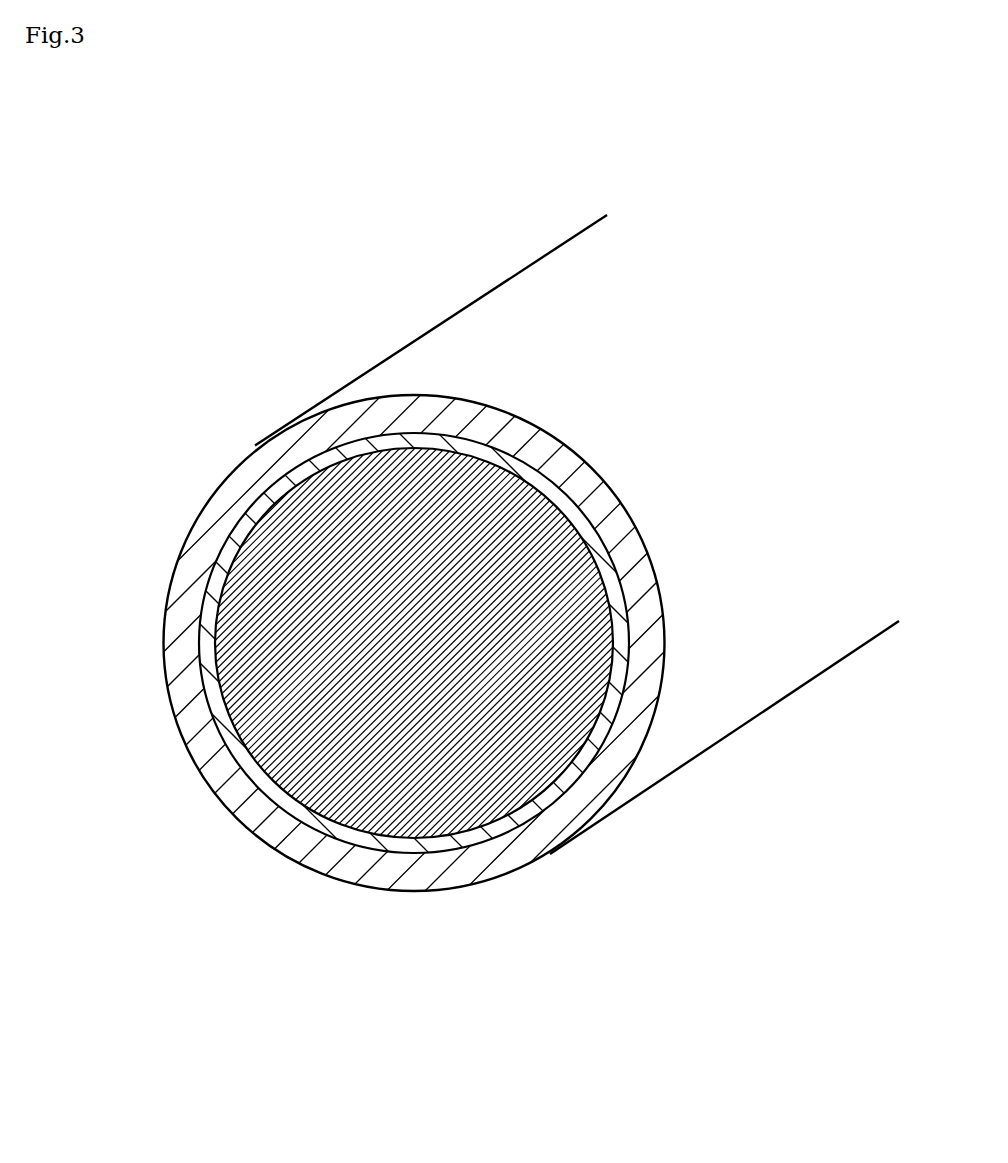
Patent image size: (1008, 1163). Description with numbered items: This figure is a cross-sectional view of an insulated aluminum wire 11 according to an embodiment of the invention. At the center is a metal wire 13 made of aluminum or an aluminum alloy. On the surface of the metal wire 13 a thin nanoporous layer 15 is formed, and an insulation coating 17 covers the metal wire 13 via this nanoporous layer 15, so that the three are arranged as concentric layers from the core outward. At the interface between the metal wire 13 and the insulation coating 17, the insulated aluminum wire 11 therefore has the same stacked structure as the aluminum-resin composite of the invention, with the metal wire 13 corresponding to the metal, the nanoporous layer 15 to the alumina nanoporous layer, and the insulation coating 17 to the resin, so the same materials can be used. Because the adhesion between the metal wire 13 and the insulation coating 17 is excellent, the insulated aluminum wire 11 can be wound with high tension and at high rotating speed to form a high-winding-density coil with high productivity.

The insulated aluminum wire 11 is at (372, 317).
The metal wire 13 is at (347, 797).
The nanoporous layer 15 is at (313, 468).
The insulation coating 17 is at (533, 847).